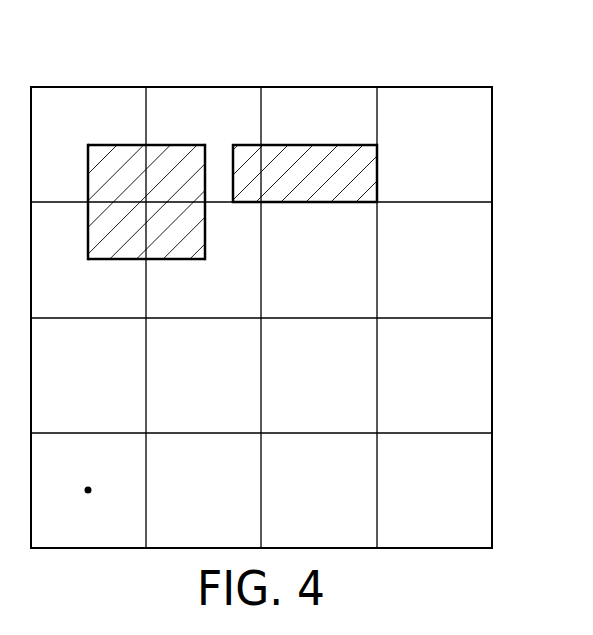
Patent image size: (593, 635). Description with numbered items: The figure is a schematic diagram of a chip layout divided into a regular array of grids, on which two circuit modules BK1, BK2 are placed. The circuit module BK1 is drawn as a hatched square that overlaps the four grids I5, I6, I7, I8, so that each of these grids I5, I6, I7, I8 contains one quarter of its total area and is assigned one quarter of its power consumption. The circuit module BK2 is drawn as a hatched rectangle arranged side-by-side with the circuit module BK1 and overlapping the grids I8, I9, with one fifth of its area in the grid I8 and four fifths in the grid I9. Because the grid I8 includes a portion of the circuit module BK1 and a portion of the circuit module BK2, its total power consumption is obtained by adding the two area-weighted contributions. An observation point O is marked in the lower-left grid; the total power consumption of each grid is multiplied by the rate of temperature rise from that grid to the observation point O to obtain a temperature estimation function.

The circuit module BK1 is at (160, 152).
The circuit module BK2 is at (275, 152).
The grid I5 is at (88, 273).
The grid I6 is at (205, 273).
The grid I7 is at (90, 129).
The grid I8 is at (202, 129).
The grid I9 is at (343, 129).
The observation point O is at (86, 506).